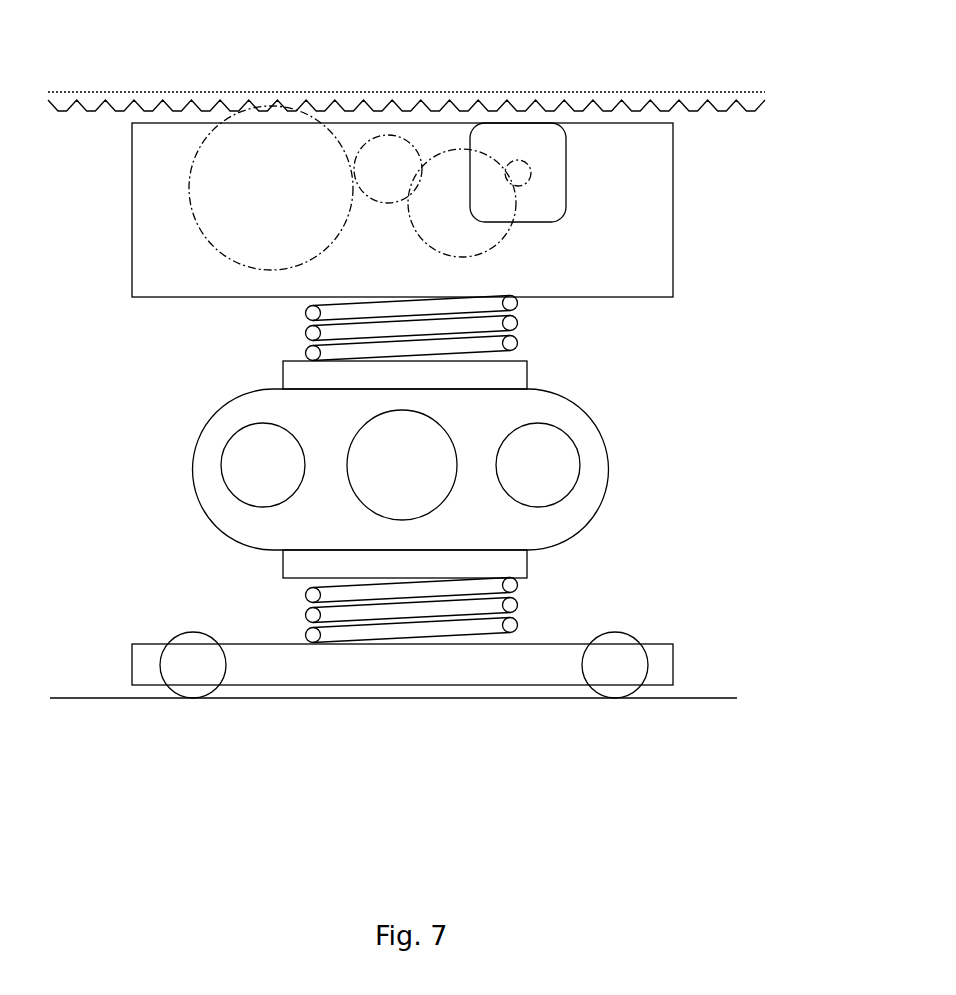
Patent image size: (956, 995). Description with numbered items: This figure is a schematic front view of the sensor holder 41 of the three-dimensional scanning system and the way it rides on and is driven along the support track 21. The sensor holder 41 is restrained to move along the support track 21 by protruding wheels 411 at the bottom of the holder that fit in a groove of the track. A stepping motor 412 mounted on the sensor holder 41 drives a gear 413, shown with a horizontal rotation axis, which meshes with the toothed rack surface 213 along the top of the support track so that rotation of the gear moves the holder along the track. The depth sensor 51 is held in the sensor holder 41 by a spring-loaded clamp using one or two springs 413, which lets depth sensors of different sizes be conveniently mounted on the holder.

The rack / toothed surface 213 is at (185, 108).
The sensor holder 41 is at (767, 123).
The protruding wheels 411 is at (192, 693).
The stepping motor 412 is at (567, 174).
The gear 413 is at (215, 203).
The depth sensor 51 is at (207, 477).
The support track 21 is at (78, 698).